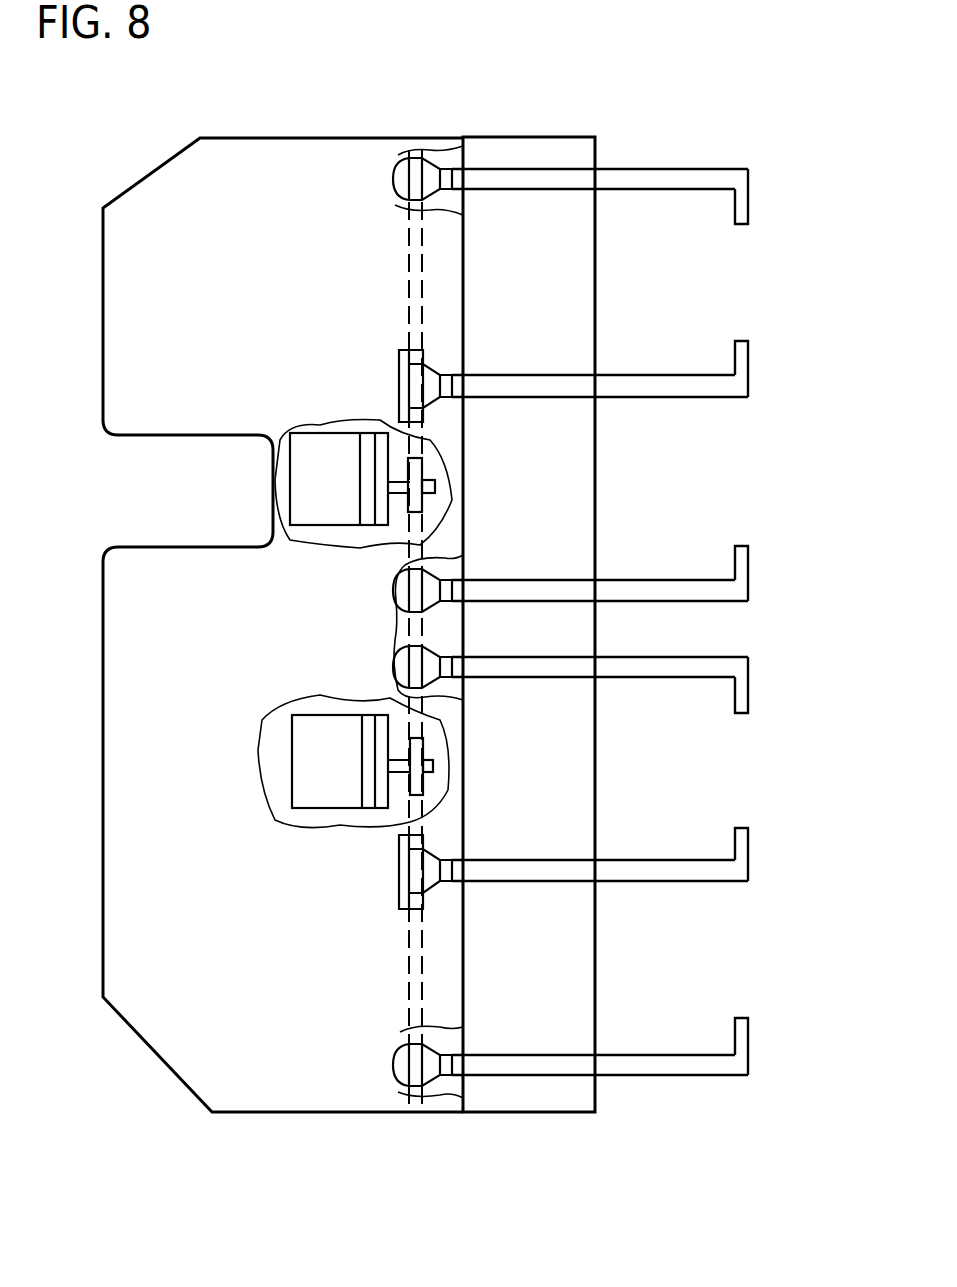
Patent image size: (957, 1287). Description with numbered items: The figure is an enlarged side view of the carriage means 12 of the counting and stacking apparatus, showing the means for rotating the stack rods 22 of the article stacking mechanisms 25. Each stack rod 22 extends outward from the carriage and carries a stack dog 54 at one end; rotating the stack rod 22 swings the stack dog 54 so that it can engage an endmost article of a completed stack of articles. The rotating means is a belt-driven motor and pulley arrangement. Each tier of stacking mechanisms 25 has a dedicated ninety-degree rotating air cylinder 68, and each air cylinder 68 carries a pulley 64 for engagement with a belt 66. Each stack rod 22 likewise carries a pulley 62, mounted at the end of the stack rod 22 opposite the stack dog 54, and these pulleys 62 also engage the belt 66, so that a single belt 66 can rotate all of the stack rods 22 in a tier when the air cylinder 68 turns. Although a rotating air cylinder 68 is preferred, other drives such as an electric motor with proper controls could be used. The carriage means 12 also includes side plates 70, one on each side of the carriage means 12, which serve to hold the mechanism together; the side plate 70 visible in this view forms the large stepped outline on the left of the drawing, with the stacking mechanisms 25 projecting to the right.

The carriage means 12 is at (148, 1055).
The stack rod 22 is at (680, 167).
The article stacking mechanism 25 is at (697, 265).
The stack dog 54 is at (750, 210).
The pulley 62 is at (420, 158).
The pulley 64 is at (425, 465).
The belt 66 is at (403, 246).
The rotating air cylinder 68 is at (293, 530).
The side plate 70 is at (103, 781).